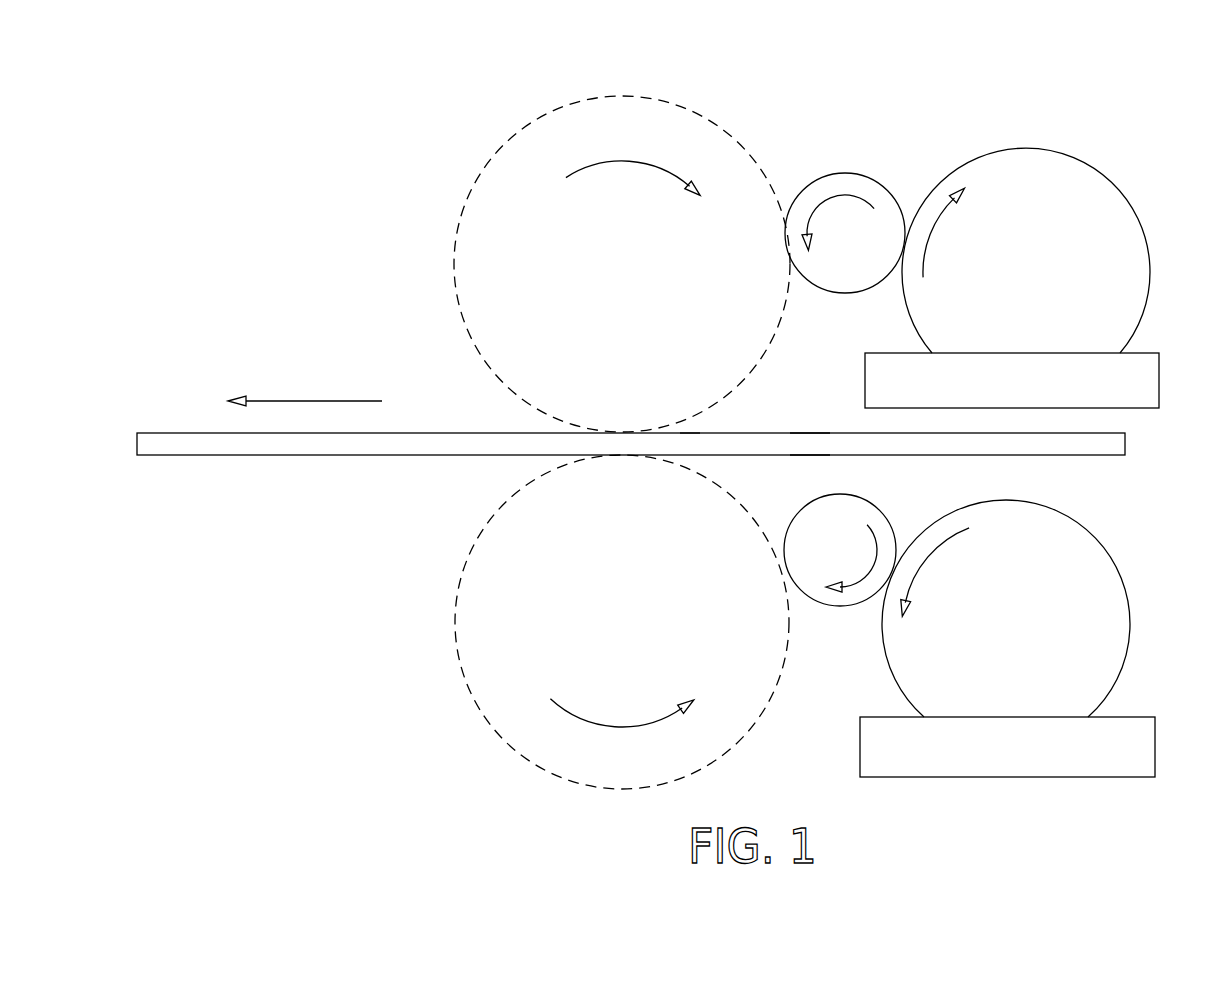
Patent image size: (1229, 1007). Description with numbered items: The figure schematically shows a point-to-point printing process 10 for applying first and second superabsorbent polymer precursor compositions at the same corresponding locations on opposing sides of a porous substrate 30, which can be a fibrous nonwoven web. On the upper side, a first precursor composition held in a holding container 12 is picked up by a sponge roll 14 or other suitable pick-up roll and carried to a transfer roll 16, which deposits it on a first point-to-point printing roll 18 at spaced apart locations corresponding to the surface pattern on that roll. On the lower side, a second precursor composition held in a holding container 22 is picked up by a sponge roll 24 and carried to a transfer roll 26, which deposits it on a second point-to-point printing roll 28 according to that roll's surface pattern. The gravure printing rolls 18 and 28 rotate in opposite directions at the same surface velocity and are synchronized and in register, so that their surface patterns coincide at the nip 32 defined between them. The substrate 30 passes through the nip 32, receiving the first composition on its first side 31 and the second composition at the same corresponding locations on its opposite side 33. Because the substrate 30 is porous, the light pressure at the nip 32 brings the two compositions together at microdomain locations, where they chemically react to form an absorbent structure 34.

The point-to-point printing process 10 is at (962, 98).
The holding container 12 is at (1159, 353).
The sponge roll 14 is at (1130, 203).
The transfer roll 16 is at (843, 171).
The first point-to-point printing roll 18 is at (732, 139).
The holding container 22 is at (1155, 717).
The sponge roll 24 is at (1115, 563).
The transfer roll 26 is at (833, 607).
The second point-to-point printing roll 28 is at (697, 770).
The porous substrate 30 is at (1125, 443).
The first side 31 is at (803, 430).
The nip 32 is at (688, 429).
The lower surface of web 33 is at (802, 455).
The absorbent structure 34 is at (153, 457).